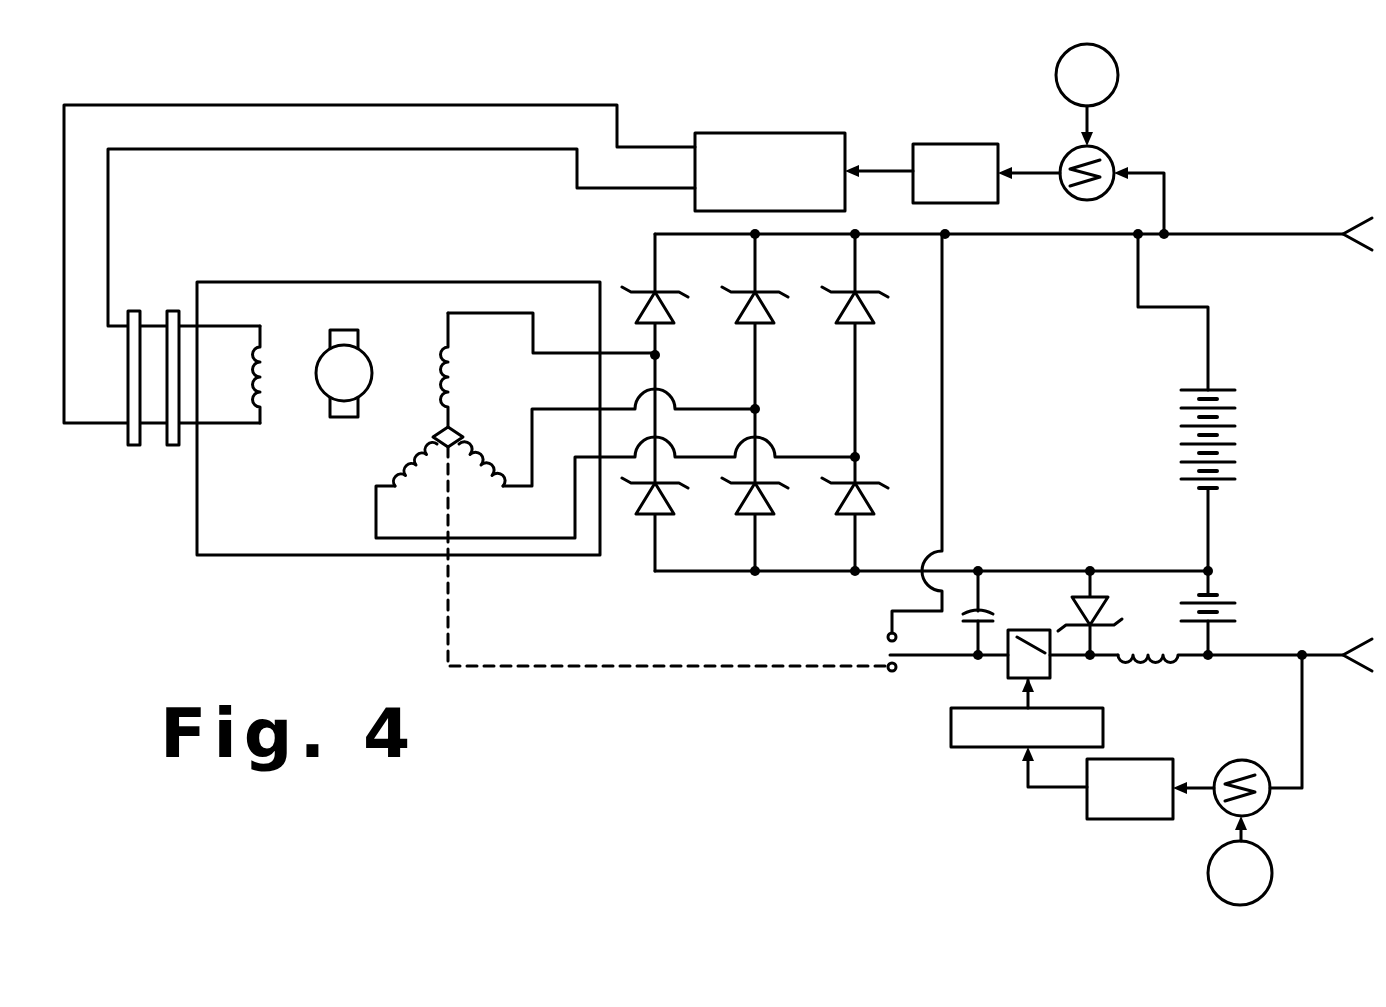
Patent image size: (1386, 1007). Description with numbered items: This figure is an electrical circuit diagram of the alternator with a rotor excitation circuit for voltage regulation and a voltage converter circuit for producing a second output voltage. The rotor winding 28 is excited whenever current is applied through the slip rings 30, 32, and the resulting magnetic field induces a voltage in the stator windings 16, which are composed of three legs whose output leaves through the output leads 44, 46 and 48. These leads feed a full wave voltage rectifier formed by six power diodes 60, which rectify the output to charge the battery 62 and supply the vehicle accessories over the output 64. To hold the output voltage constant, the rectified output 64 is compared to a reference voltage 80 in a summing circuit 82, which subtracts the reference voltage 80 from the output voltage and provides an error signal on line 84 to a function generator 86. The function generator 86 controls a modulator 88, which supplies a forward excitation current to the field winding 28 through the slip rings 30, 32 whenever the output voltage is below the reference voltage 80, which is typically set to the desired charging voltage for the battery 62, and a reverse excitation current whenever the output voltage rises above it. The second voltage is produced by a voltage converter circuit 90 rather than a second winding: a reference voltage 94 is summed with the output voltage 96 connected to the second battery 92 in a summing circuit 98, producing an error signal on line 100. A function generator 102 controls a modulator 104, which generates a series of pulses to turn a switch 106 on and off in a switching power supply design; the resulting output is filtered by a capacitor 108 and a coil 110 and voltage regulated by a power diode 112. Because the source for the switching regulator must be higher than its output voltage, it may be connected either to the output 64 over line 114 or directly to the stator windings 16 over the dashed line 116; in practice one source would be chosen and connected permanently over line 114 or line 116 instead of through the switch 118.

The stator windings 16 is at (432, 358).
The rotor winding 28 is at (262, 342).
The slip ring 30 is at (143, 315).
The slip ring 32 is at (156, 447).
The output lead 44 is at (376, 530).
The output lead 46 is at (500, 313).
The output lead 48 is at (537, 455).
The power diodes 60 is at (672, 317).
The battery 62 is at (1237, 444).
The output 64 is at (1360, 250).
The reference voltage 80 is at (1118, 66).
The summing circuit 82 is at (1075, 200).
The line 84 is at (1026, 168).
The function generator 86 is at (950, 143).
The modulator 88 is at (768, 132).
The voltage converter circuit 90 is at (1153, 780).
The second battery 92 is at (1225, 620).
The reference voltage 94 is at (1272, 862).
The output voltage 96 is at (1358, 676).
The summing circuit 98 is at (1256, 761).
The line 100 is at (1197, 786).
The function generator 102 is at (1150, 820).
The modulator 104 is at (1000, 748).
The switch 106 is at (1012, 628).
The capacitor 108 is at (970, 618).
The coil 110 is at (1135, 680).
The power diode 112 is at (1106, 606).
The line 114 is at (945, 462).
The dashed line 116 is at (690, 668).
The switch 118 is at (880, 651).